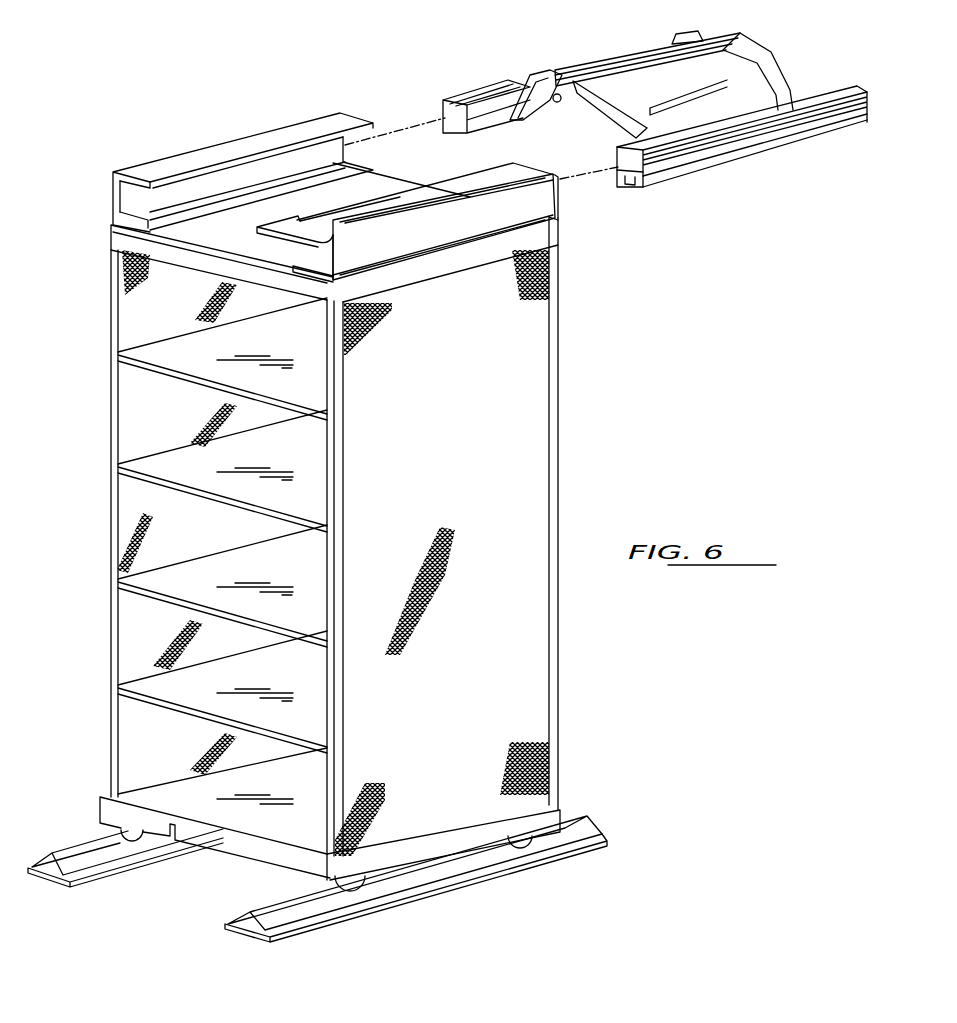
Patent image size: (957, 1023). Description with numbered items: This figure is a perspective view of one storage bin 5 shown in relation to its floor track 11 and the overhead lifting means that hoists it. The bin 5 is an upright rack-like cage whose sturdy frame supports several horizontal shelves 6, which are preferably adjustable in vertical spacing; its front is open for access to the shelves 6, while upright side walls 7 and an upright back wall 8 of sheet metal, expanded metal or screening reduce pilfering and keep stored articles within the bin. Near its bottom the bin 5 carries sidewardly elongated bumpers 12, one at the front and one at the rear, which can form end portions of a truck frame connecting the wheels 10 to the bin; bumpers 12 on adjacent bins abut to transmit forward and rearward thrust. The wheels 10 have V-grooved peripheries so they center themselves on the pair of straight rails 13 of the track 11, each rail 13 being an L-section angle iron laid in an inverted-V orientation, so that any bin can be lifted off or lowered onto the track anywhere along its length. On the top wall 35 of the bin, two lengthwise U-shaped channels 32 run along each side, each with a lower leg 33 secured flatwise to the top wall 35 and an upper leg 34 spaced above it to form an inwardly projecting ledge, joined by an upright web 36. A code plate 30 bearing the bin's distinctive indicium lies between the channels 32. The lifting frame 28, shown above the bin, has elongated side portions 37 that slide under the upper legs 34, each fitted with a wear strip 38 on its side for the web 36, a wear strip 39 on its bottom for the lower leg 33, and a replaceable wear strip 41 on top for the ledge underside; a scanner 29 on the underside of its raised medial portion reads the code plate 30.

The bin 5 is at (574, 394).
The shelves 6 is at (150, 355).
The side walls 7 is at (118, 278).
The back wall 8 is at (560, 568).
The wheels 10 is at (135, 842).
The track 11 is at (317, 896).
The bumpers 12 is at (263, 860).
The rails 13 is at (83, 852).
The lifting frame 28 is at (659, 112).
The scanner 29 is at (677, 112).
The code plate 30 is at (365, 202).
The U-shaped channels 32 is at (315, 205).
The lower leg 33 is at (143, 217).
The upper leg 34 is at (293, 132).
The top wall 35 is at (343, 186).
The upright web 36 is at (120, 187).
The side portions 37 is at (497, 88).
The wear strip 38 is at (812, 122).
The wear strip 39 is at (625, 185).
The wear strip 41 is at (478, 96).